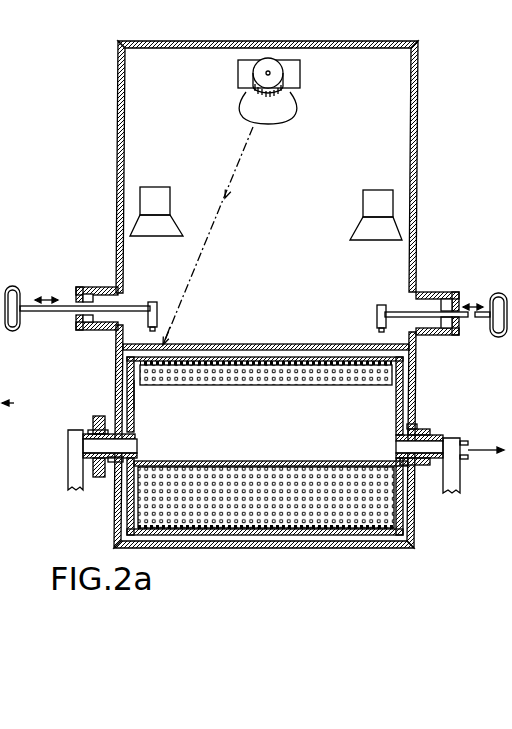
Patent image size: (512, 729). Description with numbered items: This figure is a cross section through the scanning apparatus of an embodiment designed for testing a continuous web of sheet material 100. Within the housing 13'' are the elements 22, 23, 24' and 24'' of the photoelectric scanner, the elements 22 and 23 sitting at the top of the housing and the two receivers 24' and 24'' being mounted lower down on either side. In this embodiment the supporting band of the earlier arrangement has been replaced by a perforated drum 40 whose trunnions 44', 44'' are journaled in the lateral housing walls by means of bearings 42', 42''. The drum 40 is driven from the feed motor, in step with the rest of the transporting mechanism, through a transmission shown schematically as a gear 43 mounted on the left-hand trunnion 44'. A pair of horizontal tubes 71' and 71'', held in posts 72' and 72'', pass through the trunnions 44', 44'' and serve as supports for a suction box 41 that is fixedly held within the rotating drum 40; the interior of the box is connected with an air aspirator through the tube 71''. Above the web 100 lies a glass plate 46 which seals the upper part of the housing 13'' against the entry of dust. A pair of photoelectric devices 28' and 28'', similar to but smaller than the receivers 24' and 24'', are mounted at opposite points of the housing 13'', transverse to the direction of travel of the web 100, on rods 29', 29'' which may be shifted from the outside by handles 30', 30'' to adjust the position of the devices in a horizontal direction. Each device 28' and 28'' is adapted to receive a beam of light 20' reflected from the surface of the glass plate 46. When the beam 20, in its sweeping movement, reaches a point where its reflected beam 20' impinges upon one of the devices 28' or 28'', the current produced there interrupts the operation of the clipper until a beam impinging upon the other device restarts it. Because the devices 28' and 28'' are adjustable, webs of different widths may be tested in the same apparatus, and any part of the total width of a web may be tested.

The housing 13'' is at (267, 294).
The photoelectric scanner element 22 is at (288, 83).
The photoelectric scanner element 23 is at (292, 108).
The beam of light 20 is at (217, 236).
The reflected beam 20' is at (183, 328).
The receiver 24' is at (169, 211).
The receiver 24'' is at (360, 213).
The handle 30' is at (25, 298).
The rod 29' is at (85, 288).
The photoelectric device 28' is at (162, 303).
The handle 30'' is at (494, 301).
The rod 29'' is at (437, 291).
The photoelectric device 28'' is at (364, 303).
The glass plate 46 is at (282, 345).
The web of sheet material 100 is at (401, 359).
The suction box 41 is at (135, 396).
The perforated drum 40 is at (272, 530).
The post 72' is at (83, 463).
The horizontal tube 71' is at (68, 447).
The gear 43 is at (96, 418).
The trunnion 44' is at (80, 399).
The bearing 42' is at (106, 487).
The post 72'' is at (450, 460).
The horizontal tube 71'' is at (442, 480).
The trunnion 44'' is at (442, 433).
The bearing 42'' is at (428, 416).